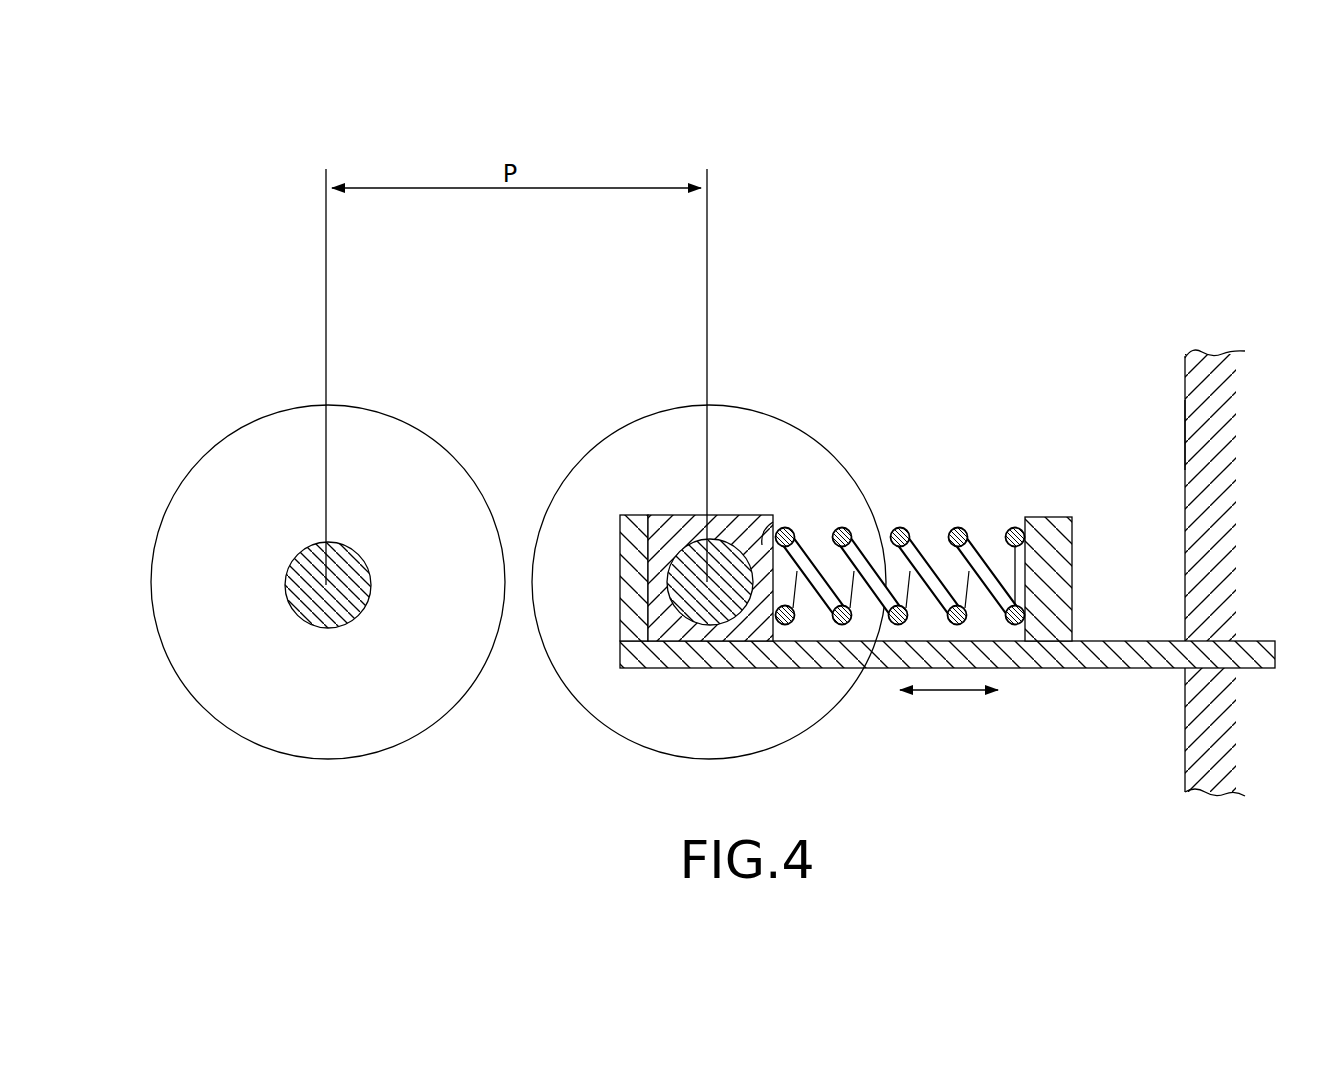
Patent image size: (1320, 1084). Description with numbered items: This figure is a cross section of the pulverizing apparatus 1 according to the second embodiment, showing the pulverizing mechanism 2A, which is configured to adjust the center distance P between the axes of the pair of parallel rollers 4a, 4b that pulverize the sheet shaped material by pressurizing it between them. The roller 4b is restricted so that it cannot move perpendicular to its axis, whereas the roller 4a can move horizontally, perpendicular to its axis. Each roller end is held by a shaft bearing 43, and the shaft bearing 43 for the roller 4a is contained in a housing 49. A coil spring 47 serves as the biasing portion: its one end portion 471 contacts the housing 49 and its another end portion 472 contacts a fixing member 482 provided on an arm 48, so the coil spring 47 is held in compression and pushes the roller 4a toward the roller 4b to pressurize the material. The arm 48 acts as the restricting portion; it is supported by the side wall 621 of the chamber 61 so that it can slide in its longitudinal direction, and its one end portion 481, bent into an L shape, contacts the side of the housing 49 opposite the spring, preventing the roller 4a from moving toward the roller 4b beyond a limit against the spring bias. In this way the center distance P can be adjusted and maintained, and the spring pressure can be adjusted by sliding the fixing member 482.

The pulverizing apparatus 1 is at (920, 196).
The pulverizing mechanism 2A is at (817, 293).
The roller 4a is at (724, 489).
The roller 4b is at (322, 489).
The shaft bearing 43 is at (722, 545).
The coil spring 47 is at (960, 526).
The one end portion 471 is at (767, 522).
The another end portion 472 is at (1047, 557).
The arm 48 is at (1101, 636).
The one end portion 481 is at (632, 602).
The fixing member 482 is at (1050, 522).
The housing 49 is at (680, 512).
The chamber 61 is at (1179, 376).
The side wall 621 is at (1201, 436).